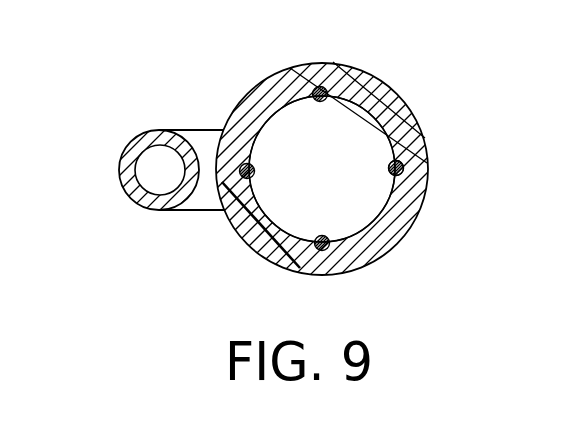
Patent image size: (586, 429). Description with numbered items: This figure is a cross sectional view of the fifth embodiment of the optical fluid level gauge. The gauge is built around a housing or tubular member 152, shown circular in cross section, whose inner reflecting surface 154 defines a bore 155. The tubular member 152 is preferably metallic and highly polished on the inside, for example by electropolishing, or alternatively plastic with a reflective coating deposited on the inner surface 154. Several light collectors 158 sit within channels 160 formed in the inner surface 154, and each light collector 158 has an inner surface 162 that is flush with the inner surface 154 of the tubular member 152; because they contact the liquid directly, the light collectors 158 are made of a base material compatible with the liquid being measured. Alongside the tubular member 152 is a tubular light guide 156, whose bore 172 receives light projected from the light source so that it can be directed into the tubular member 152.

The tubular member 152 is at (430, 162).
The inner reflecting surface 154 is at (368, 117).
The bore 155 is at (305, 188).
The tubular light guide 156 is at (117, 152).
The light collectors 158 is at (247, 164).
The channels 160 is at (334, 127).
The inner surface 162 is at (392, 168).
The bore 172 is at (158, 170).